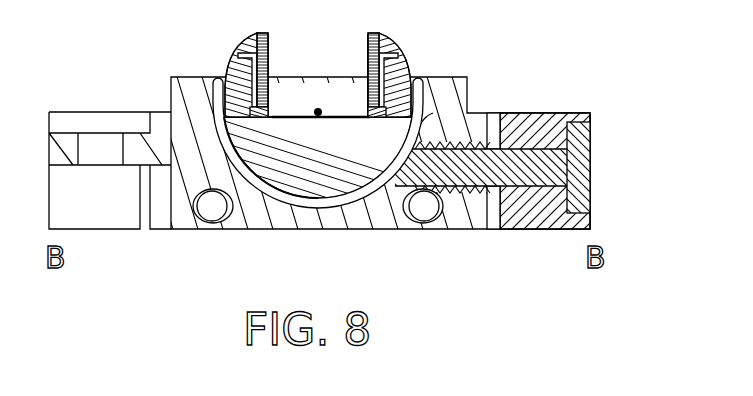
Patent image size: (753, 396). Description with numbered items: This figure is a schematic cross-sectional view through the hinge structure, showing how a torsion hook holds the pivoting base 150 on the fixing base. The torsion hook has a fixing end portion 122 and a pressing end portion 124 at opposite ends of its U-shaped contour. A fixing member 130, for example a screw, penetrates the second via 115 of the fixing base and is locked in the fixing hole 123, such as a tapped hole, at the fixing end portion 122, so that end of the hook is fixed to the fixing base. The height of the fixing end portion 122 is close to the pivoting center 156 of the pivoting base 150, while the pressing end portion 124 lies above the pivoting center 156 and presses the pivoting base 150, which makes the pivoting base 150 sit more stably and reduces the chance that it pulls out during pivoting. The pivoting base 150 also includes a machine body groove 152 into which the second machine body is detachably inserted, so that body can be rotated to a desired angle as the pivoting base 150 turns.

The second via 115 is at (538, 143).
The fixing end portion 122 is at (450, 123).
The fixing hole 123 is at (472, 142).
The pressing end portion 124 is at (225, 80).
The fixing member 130 is at (572, 167).
The pivoting base 150 is at (338, 168).
The machine body groove 152 is at (363, 80).
The pivoting center 156 is at (315, 109).